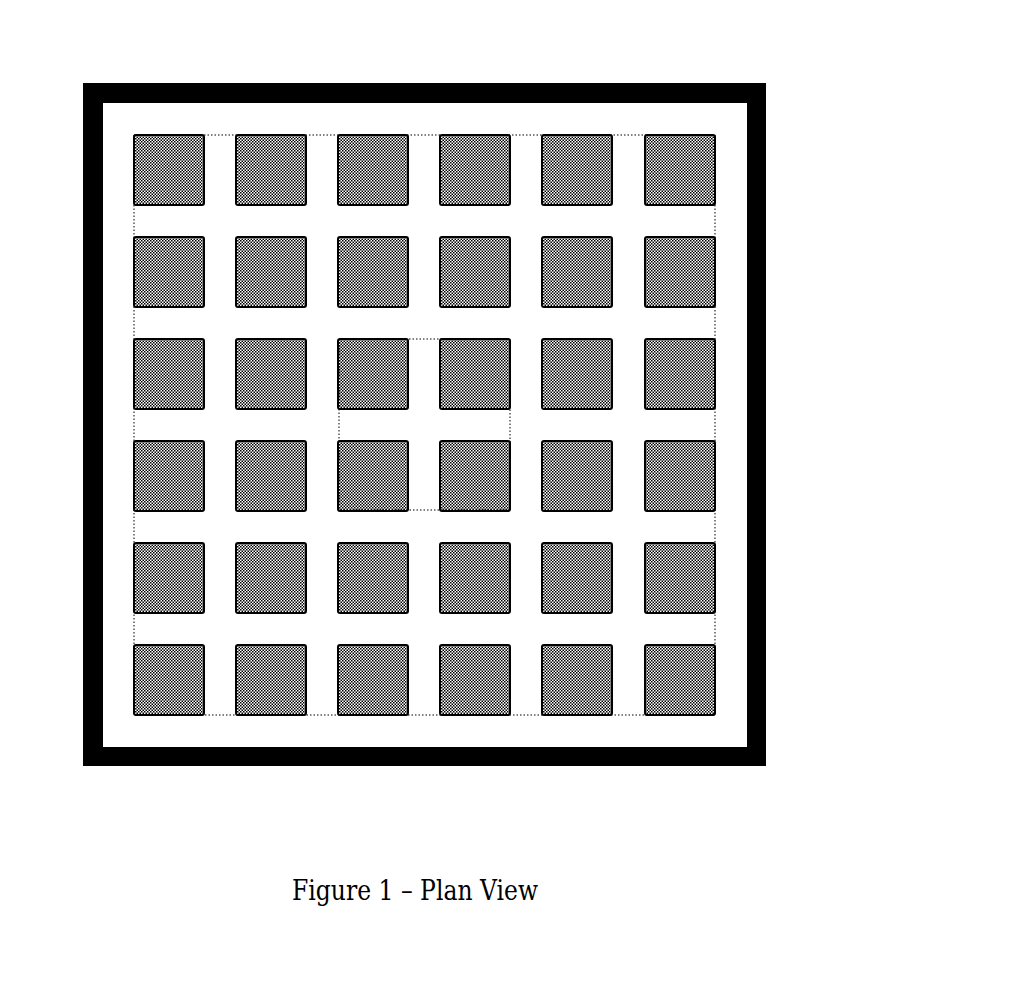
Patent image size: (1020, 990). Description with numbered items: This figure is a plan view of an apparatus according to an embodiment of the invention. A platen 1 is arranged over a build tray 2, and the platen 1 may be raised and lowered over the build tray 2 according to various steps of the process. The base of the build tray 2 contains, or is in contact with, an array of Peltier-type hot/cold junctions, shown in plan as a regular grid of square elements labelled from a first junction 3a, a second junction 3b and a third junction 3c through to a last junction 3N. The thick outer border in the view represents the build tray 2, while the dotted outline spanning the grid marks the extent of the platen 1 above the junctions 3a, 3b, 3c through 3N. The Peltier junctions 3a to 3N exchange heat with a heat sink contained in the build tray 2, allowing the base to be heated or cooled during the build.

The platen 1 is at (424, 410).
The build tray 2 is at (722, 83).
The Peltier-type hot/cold junction 3a is at (169, 170).
The Peltier-type hot/cold junction 3b is at (271, 170).
The Peltier-type hot/cold junction 3c is at (373, 170).
The Peltier-type hot/cold junction 3N is at (680, 680).